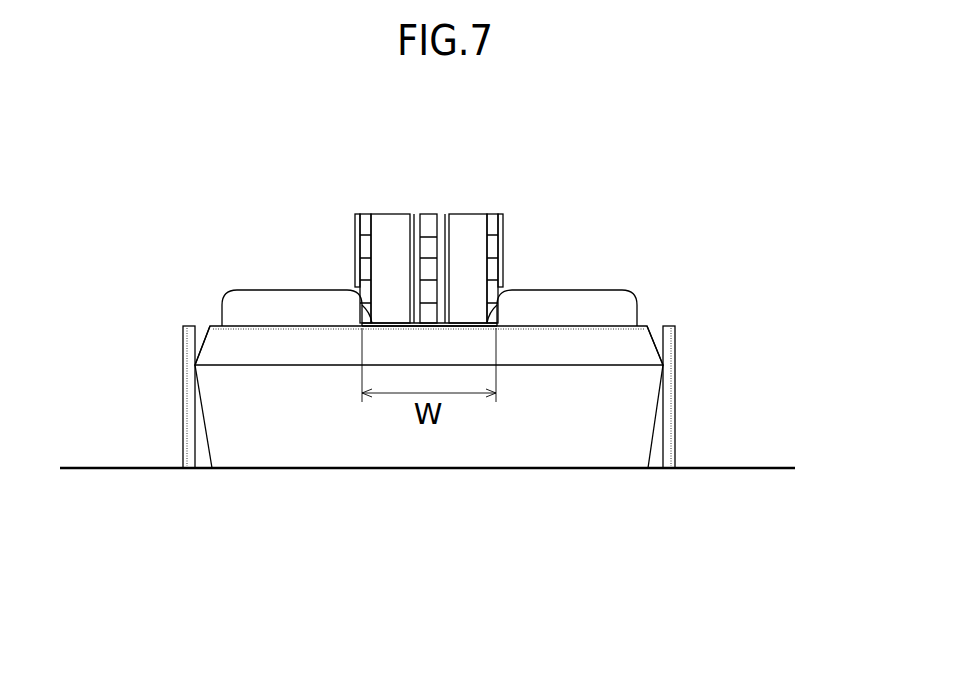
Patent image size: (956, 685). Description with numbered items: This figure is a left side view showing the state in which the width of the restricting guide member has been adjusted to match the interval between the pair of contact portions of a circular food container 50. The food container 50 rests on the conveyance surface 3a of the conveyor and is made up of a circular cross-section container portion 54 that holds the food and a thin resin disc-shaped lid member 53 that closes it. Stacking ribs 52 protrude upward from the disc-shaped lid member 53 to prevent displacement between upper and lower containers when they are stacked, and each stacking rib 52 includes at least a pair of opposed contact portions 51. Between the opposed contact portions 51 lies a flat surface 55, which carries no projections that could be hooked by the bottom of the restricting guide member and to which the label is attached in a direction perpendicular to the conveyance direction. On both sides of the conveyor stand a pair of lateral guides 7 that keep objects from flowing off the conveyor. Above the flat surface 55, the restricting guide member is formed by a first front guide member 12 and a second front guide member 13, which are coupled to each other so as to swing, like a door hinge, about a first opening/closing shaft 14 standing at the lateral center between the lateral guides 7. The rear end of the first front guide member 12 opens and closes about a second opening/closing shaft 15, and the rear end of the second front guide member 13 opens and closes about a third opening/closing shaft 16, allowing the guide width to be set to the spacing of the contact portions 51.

The conveyance surface 3a is at (759, 468).
The lateral guide 7 is at (188, 345).
The first front guide member 12 is at (393, 214).
The second front guide member 13 is at (472, 214).
The first opening/closing shaft 14 is at (427, 214).
The second opening/closing shaft 15 is at (367, 214).
The third opening/closing shaft 16 is at (490, 214).
The food container 50 is at (641, 325).
The contact portion 51 is at (362, 327).
The stacking rib 52 is at (258, 303).
The disc-shaped lid member 53 is at (211, 335).
The circular cross-section container portion 54 is at (258, 447).
The flat surface 55 is at (432, 323).